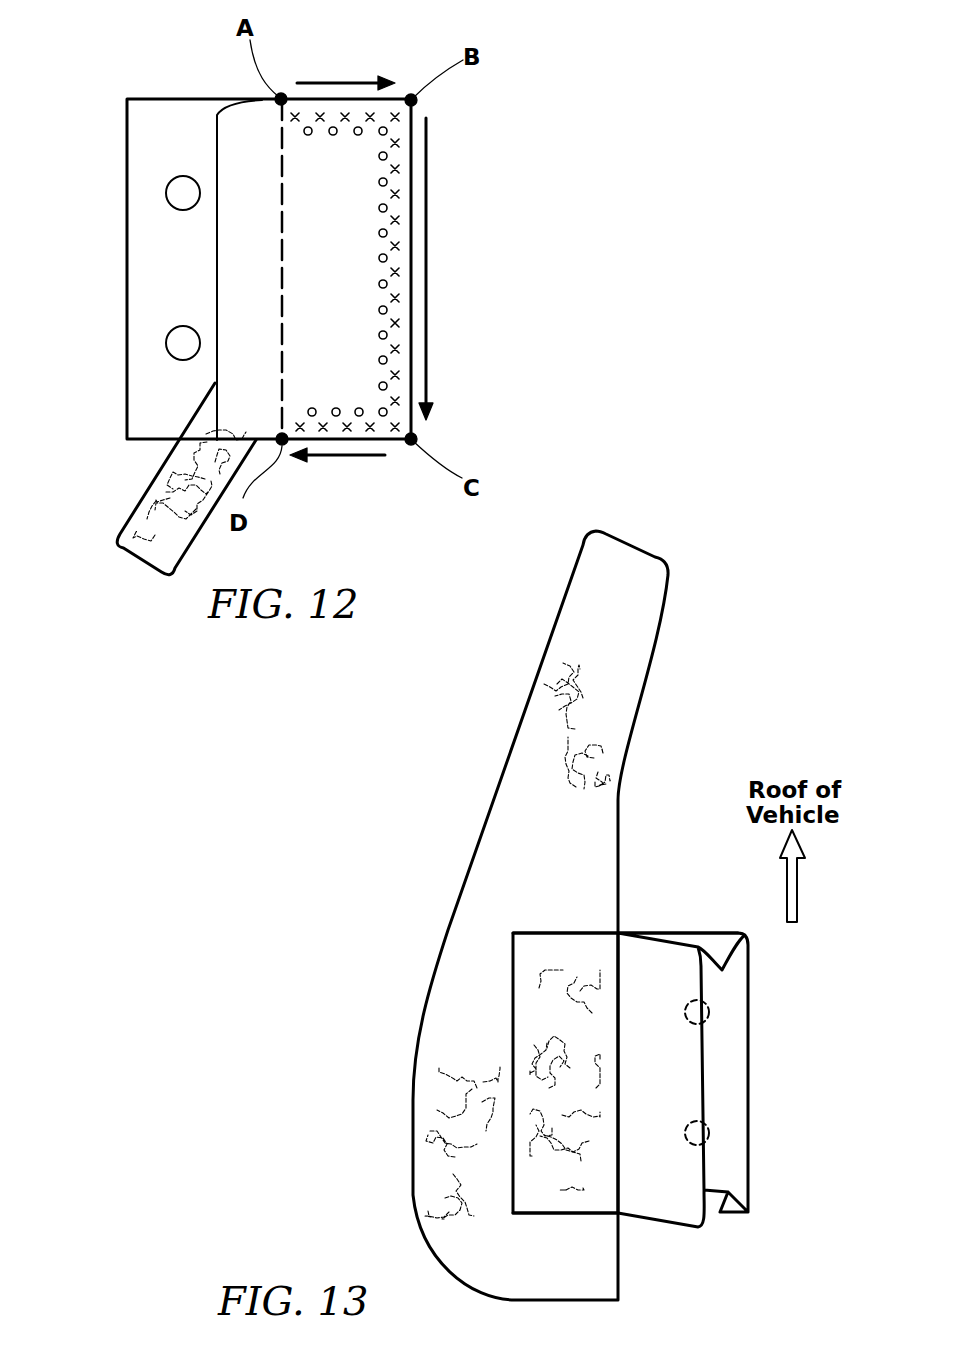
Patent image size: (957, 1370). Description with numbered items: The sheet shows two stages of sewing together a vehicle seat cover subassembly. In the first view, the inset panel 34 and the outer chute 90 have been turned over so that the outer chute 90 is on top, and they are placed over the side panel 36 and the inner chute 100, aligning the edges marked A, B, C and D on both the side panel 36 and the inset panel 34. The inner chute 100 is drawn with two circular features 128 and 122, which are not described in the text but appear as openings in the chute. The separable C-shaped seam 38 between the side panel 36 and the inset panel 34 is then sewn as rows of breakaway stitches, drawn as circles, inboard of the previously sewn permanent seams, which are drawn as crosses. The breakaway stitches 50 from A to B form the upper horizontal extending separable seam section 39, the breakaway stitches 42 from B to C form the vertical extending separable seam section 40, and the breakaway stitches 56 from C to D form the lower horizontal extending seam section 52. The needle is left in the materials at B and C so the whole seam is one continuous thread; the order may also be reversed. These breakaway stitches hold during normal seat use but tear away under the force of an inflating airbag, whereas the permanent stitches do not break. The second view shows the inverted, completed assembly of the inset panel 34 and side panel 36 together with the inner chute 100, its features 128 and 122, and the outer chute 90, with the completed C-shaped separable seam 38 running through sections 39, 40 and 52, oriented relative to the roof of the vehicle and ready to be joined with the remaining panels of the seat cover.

In FIG. 12, the inner chute 100 is at (145, 147).
In FIG. 13, the inner chute 100 is at (750, 1085).
In FIG. 12, the upper mounting hole 128 is at (172, 196).
In FIG. 13, the upper mounting hole 128 is at (712, 1010).
In FIG. 12, the outer chute 90 is at (252, 268).
In FIG. 13, the outer chute 90 is at (661, 962).
In FIG. 12, the lower mounting hole 122 is at (172, 346).
In FIG. 13, the lower mounting hole 122 is at (712, 1135).
In FIG. 12, the side panel 36 is at (160, 511).
In FIG. 13, the side panel 36 is at (497, 882).
In FIG. 12, the breakaway stitches from A to B 50 is at (358, 128).
In FIG. 12, the breakaway stitches from B to C 42 is at (388, 181).
In FIG. 12, the inset panel 34 is at (283, 286).
In FIG. 13, the inset panel 34 is at (543, 1033).
In FIG. 12, the separable C-shaped seam 38 is at (400, 322).
In FIG. 13, the separable C-shaped seam 38 is at (513, 1103).
In FIG. 12, the breakaway stitches from C to D 56 is at (359, 416).
In FIG. 13, the upper horizontal extending separable seam section 39 is at (573, 933).
In FIG. 13, the vertical extending separable seam section 40 is at (513, 1163).
In FIG. 13, the lower horizontal extending seam section 52 is at (585, 1213).